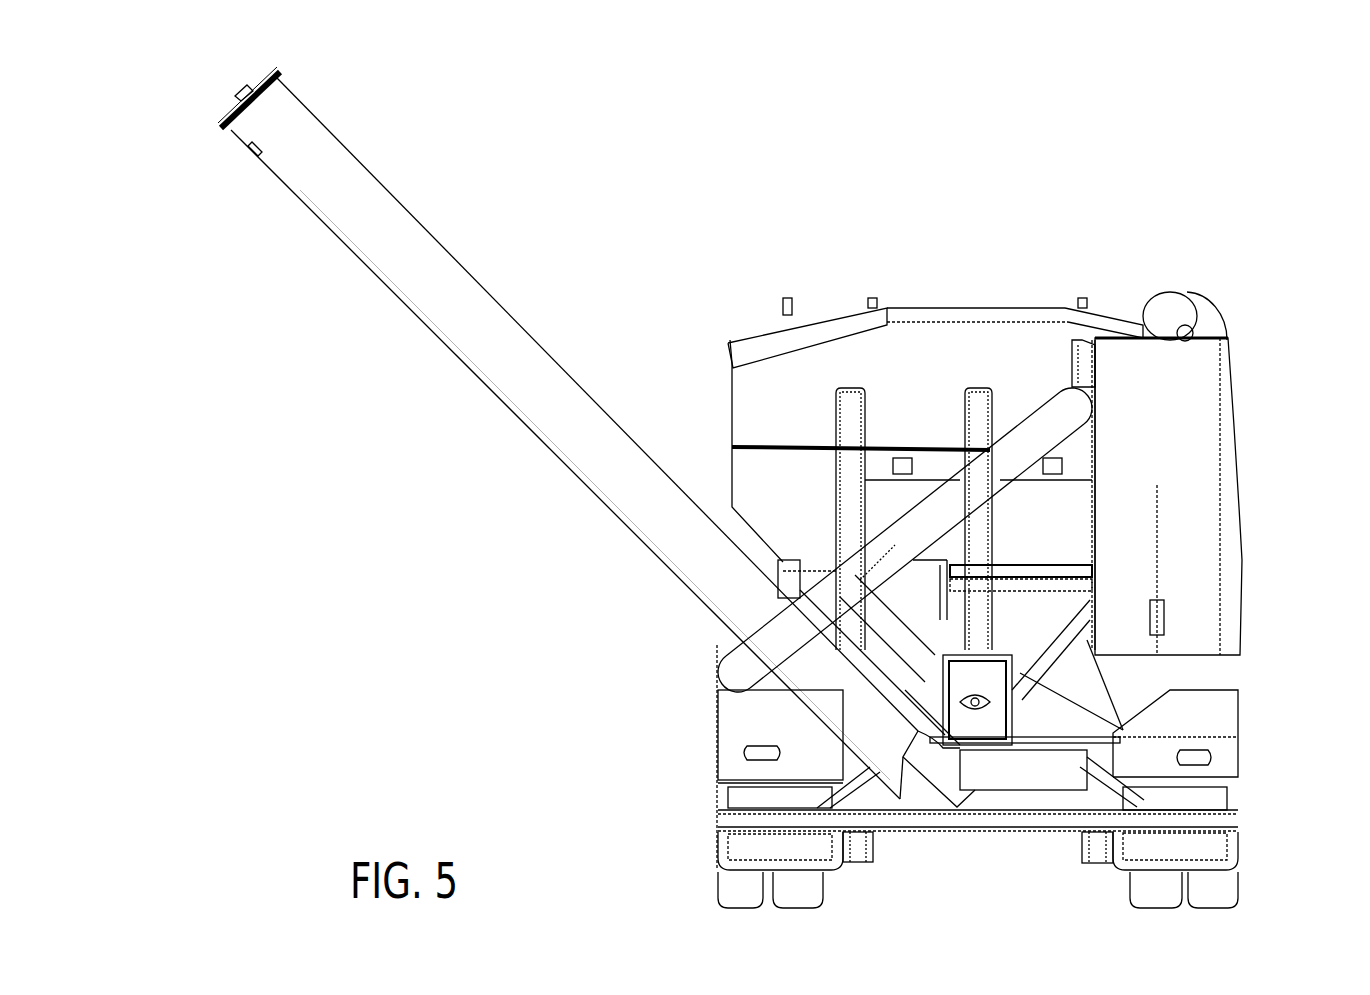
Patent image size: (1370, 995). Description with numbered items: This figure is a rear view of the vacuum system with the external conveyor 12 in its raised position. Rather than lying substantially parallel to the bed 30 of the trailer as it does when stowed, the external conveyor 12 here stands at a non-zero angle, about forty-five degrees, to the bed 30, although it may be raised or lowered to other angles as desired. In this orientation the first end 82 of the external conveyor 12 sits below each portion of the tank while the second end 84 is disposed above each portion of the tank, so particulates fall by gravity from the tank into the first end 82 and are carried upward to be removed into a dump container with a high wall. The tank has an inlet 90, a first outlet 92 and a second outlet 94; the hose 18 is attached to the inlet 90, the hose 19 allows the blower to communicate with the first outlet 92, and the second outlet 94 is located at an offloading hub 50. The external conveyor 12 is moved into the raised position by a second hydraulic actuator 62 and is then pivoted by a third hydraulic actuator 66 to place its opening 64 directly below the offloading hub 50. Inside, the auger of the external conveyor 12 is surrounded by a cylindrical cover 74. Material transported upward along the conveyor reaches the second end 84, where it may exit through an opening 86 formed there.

The external conveyor 12 is at (574, 438).
The hose 18 is at (879, 479).
The hose 19 is at (1240, 283).
The bed 30 is at (1225, 750).
The offloading hub 50 is at (1149, 655).
The second hydraulic actuator 62 is at (757, 666).
The opening 64 is at (1052, 843).
The third hydraulic actuator 66 is at (1146, 574).
The cylindrical cover 74 is at (595, 485).
The first end 82 is at (901, 842).
The second end 84 is at (213, 83).
The opening 86 is at (204, 177).
The inlet 90 is at (905, 470).
The first outlet 92 is at (1130, 317).
The second outlet 94 is at (1025, 853).